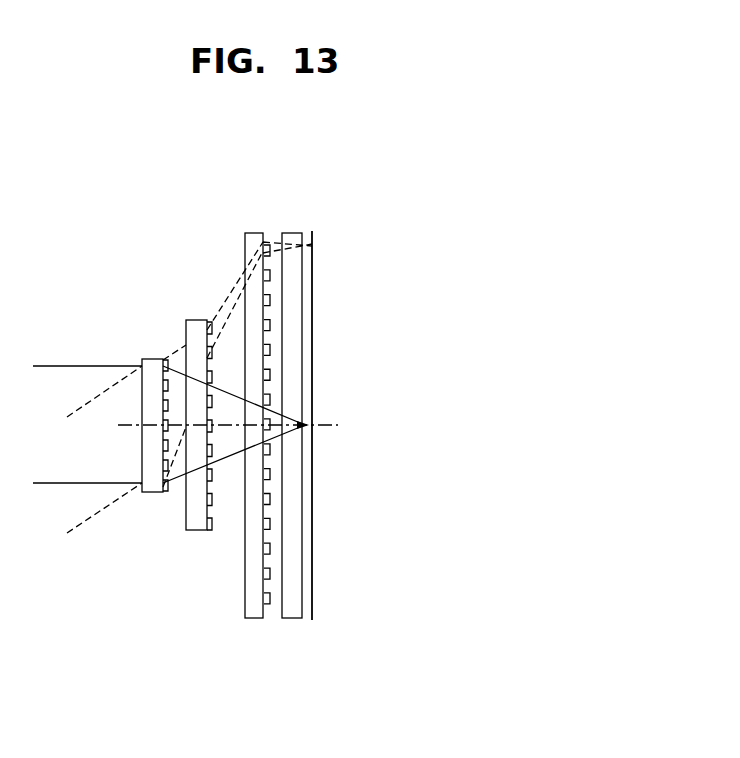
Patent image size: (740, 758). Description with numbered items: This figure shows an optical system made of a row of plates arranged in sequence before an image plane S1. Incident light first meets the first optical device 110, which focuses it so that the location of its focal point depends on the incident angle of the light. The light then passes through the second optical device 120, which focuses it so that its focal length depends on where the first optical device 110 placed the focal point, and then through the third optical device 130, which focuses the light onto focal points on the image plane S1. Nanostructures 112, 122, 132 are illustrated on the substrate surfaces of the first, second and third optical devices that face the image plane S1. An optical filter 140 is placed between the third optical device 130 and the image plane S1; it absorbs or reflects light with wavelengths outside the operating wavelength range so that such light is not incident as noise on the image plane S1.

The first optical device 110 is at (152, 347).
The nanostructures 112 is at (165, 493).
The second optical device 120 is at (196, 306).
The nanostructures 122 is at (210, 530).
The third optical device 130 is at (253, 219).
The nanostructures 132 is at (268, 605).
The optical filter 140 is at (293, 233).
The image plane S1 is at (313, 276).